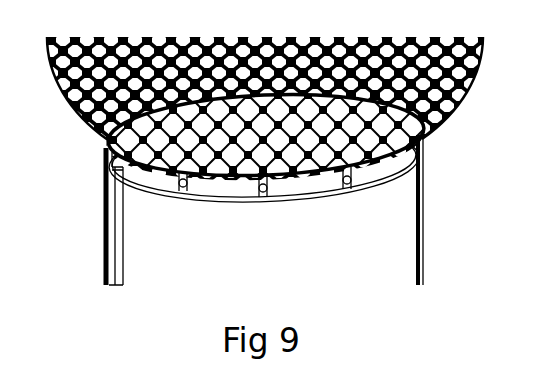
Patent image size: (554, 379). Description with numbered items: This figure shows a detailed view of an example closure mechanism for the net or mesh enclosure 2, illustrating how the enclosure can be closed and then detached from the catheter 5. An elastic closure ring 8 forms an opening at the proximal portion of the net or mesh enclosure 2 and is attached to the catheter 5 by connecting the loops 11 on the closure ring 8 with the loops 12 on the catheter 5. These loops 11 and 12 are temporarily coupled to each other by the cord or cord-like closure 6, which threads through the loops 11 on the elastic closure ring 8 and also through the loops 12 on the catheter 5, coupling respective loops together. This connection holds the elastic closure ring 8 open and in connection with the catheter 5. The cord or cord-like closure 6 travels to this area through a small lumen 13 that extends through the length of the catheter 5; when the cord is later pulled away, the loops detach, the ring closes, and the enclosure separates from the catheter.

The net or mesh enclosure 2 is at (66, 107).
The catheter 5 is at (103, 228).
The cord or cord-like closure 6 is at (144, 172).
The elastic closure ring 8 is at (118, 153).
The loops on the closure ring 11 is at (258, 200).
The loops on the catheter 12 is at (278, 202).
The small lumen 13 is at (123, 257).